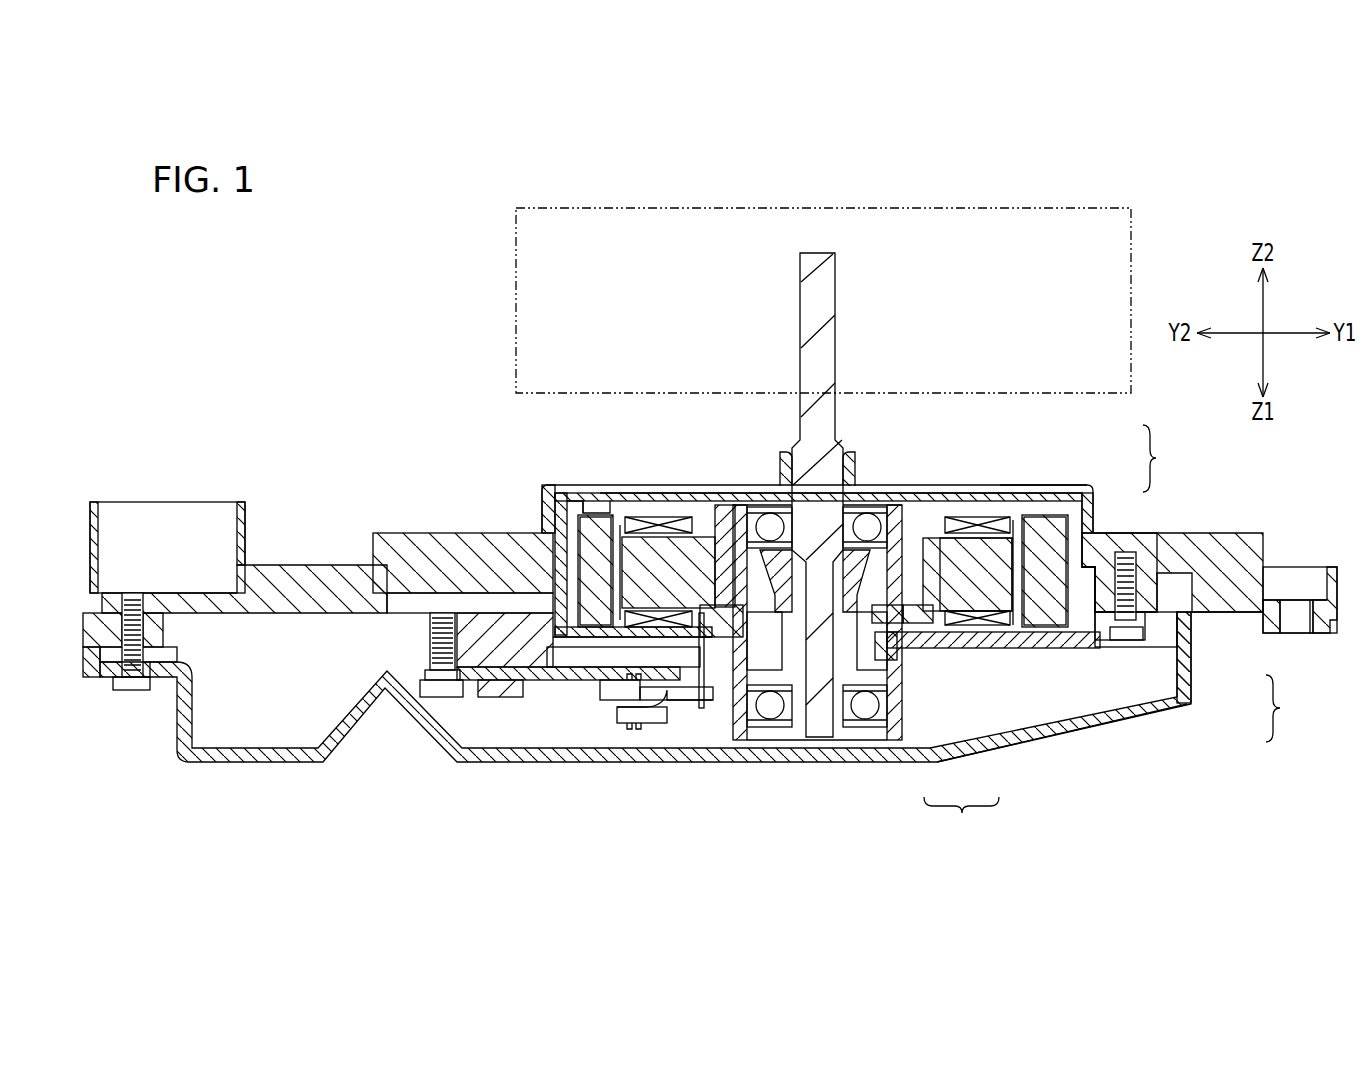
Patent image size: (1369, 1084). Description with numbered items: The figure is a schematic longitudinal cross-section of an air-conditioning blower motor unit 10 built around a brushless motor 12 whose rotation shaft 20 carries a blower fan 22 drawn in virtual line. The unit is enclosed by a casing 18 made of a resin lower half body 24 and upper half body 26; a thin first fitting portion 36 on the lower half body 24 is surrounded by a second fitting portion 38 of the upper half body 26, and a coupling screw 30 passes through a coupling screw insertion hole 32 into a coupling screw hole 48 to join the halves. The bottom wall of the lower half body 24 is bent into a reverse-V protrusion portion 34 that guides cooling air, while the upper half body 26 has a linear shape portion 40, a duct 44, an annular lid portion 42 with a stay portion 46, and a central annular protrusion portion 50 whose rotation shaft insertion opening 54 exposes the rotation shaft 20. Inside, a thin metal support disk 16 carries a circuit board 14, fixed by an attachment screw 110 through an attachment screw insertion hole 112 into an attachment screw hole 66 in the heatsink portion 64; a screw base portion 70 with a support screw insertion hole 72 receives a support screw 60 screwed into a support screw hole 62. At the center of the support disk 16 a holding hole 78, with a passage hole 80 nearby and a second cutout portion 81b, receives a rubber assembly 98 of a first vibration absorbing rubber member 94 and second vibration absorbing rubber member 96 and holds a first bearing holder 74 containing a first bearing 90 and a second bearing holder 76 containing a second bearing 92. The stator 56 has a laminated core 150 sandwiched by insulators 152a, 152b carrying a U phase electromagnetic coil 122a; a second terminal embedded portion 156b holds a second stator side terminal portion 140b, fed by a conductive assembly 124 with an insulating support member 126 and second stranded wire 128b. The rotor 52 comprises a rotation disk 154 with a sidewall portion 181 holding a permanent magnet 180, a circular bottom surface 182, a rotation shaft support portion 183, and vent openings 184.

The air-conditioning blower motor unit 10 is at (290, 245).
The brushless motor 12 is at (1163, 458).
The circuit board 14 is at (505, 698).
The support disk 16 is at (1060, 648).
The casing 18 is at (1291, 708).
The rotation shaft 20 is at (805, 272).
The blower fan 22 is at (514, 248).
The lower half body 24 is at (1190, 716).
The upper half body 26 is at (1237, 613).
The coupling screw 30 is at (128, 690).
The coupling screw insertion hole 32 is at (141, 680).
The protrusion portion 34 is at (343, 730).
The first fitting portion 36 is at (97, 678).
The second fitting portion 38 is at (83, 657).
The linear shape portion 40 is at (273, 576).
The lid portion 42 is at (405, 546).
The duct 44 is at (90, 528).
The stay portion 46 is at (1328, 607).
The coupling screw hole 48 is at (132, 603).
The annular protrusion portion 50 is at (541, 497).
The rotor 52 is at (1073, 510).
The rotation shaft insertion opening 54 is at (588, 490).
The stator 56 is at (1040, 489).
The support screw 60 is at (1194, 577).
The support screw hole 62 is at (1144, 593).
The heatsink portion 64 is at (521, 638).
The attachment screw hole 66 is at (438, 630).
The screw base portion 70 is at (1100, 622).
The support screw insertion hole 72 is at (1127, 634).
The first bearing holder 74 is at (736, 724).
The second bearing holder 76 is at (888, 508).
The holding hole 78 is at (853, 615).
The passage hole 80 is at (587, 650).
The second cutout portion 81b is at (690, 645).
The first bearing 90 is at (880, 727).
The second bearing 92 is at (862, 505).
The first vibration absorbing rubber member 94 is at (918, 647).
The second vibration absorbing rubber member 96 is at (936, 617).
The rubber assembly 98 is at (961, 819).
The attachment screw 110 is at (436, 690).
The attachment screw insertion hole 112 is at (431, 677).
The U phase electromagnetic coil 122a is at (992, 552).
The conductive assembly 124 is at (620, 722).
The insulating support member 126 is at (611, 700).
The second stranded wire 128b is at (680, 702).
The second stator side terminal portion 140b is at (772, 708).
The laminated core 150 is at (1018, 608).
The insulator 152a is at (942, 617).
The insulator 152b is at (692, 515).
The rotation disk 154 is at (921, 483).
The second terminal embedded portion 156b is at (704, 640).
The permanent magnet 180 is at (592, 545).
The sidewall portion 181 is at (1068, 558).
The circular bottom surface 182 is at (972, 518).
The rotation shaft support portion 183 is at (787, 462).
The vent opening 184 is at (637, 500).